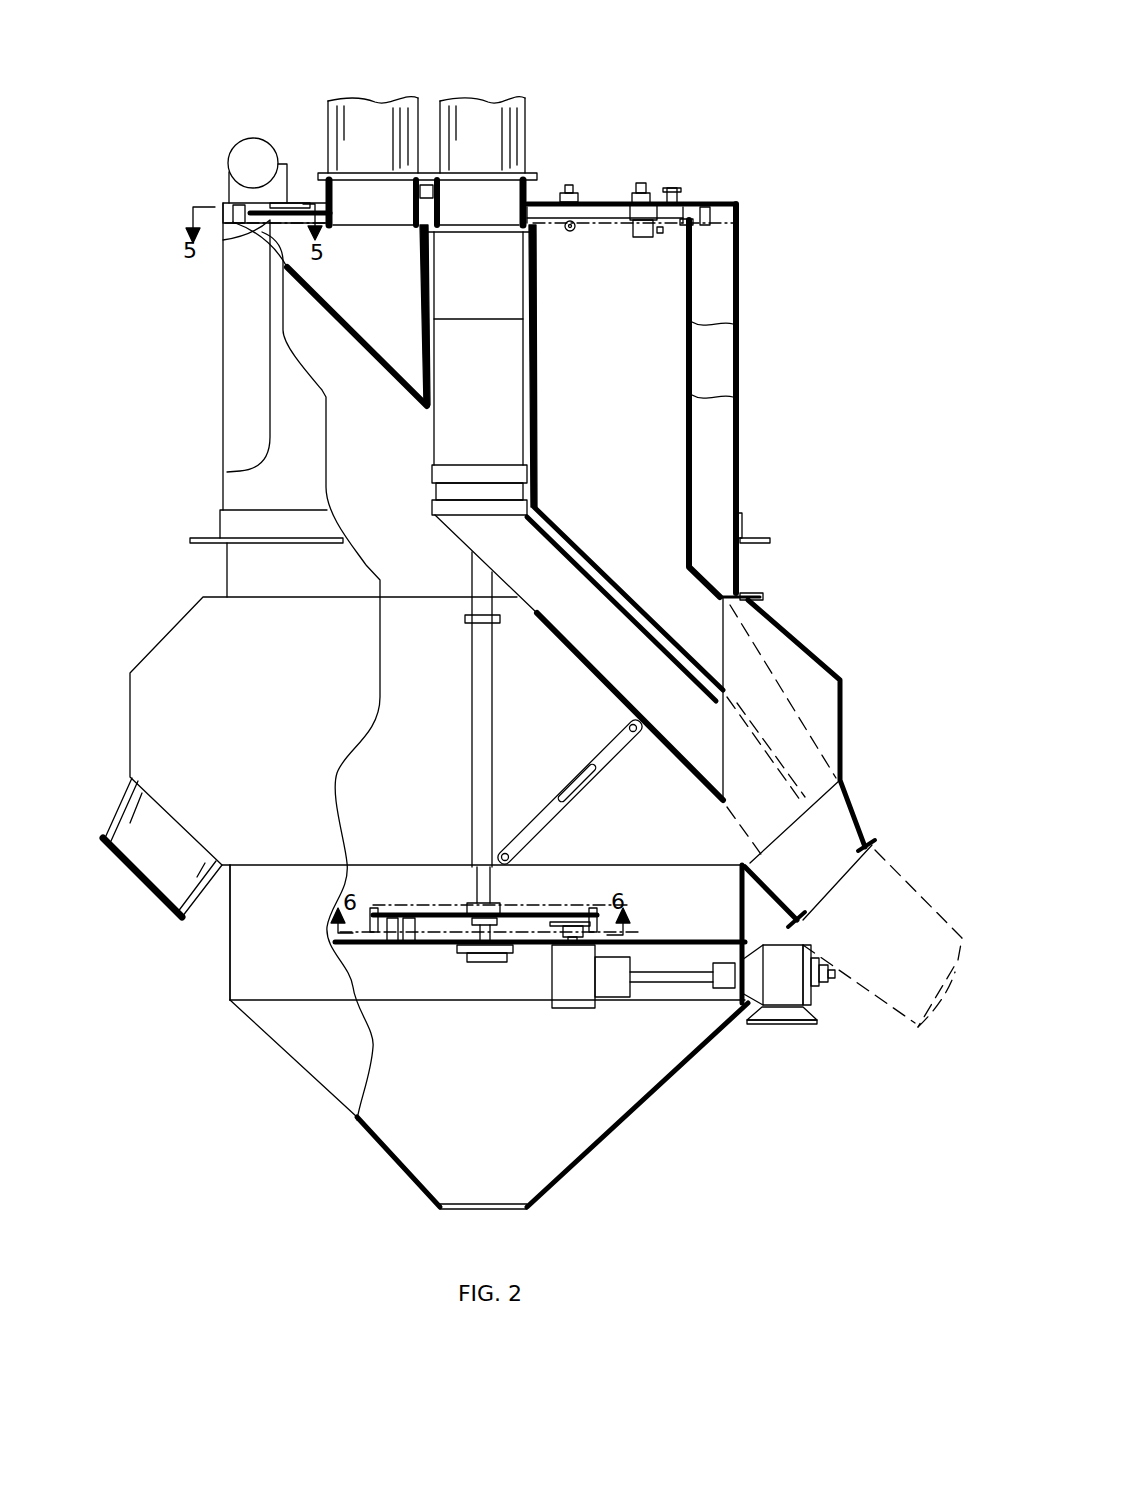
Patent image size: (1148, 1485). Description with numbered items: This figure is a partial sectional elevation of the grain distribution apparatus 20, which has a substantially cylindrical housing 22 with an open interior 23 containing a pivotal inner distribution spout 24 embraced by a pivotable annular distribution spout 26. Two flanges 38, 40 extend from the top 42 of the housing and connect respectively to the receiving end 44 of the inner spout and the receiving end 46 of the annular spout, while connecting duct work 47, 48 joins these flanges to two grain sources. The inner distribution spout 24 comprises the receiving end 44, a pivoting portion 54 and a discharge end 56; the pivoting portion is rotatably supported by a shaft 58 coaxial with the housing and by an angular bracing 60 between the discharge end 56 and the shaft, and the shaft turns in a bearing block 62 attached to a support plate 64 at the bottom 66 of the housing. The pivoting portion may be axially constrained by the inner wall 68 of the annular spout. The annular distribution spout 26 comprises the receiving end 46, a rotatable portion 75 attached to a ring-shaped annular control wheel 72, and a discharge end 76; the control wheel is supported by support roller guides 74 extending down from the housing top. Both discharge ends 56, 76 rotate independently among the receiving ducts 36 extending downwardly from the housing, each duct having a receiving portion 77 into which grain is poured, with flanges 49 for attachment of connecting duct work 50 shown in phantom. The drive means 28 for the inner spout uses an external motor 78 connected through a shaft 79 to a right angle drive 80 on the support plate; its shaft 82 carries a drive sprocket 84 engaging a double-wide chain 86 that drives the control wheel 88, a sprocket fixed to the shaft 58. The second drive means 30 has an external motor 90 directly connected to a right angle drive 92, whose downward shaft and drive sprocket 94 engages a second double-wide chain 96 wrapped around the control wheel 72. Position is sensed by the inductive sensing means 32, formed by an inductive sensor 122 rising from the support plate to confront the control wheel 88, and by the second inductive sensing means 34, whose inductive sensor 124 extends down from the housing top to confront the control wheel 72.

The grain distribution apparatus 20 is at (607, 86).
The housing 22 is at (748, 497).
The open interior 23 is at (712, 266).
The inner distribution spout 24 is at (432, 434).
The annular distribution spout 26 is at (735, 322).
The drive means 28 is at (675, 1040).
The second drive means 30 is at (243, 135).
The inductive sensing means 32 is at (404, 962).
The second inductive sensing means 34 is at (680, 189).
The receiving ducts 36 is at (122, 803).
The flange 38 is at (324, 188).
The flange 40 is at (530, 214).
The top 42 is at (730, 205).
The receiving end 44 is at (506, 177).
The receiving end 46 is at (346, 182).
The connecting duct work 47 is at (526, 113).
The connecting duct work 48 is at (418, 112).
The flanges 49 is at (104, 842).
The connecting duct work 50 is at (905, 880).
The pivoting portion 54 is at (528, 362).
The discharge end 56 is at (690, 767).
The shaft 58 is at (473, 722).
The angular bracing 60 is at (571, 805).
The bearing block 62 is at (459, 960).
The support plate 64 is at (357, 940).
The bottom 66 is at (231, 960).
The inner wall 68 is at (538, 291).
The annular control wheel 72 is at (603, 226).
The support roller guides 74 is at (575, 191).
The rotatable portion 75 is at (326, 308).
The discharge end 76 is at (765, 645).
The receiving portion 77 is at (810, 812).
The motor 78 is at (818, 1000).
The shaft 79 is at (663, 985).
The right angle drive 80 is at (576, 997).
The shaft 82 is at (568, 943).
The drive sprocket 84 is at (568, 924).
The double-wide chain 86 is at (368, 932).
The control wheel 88 is at (443, 913).
The motor 90 is at (229, 158).
The right angle drive 92 is at (229, 177).
The shaft and drive sprocket 94 is at (297, 200).
The second double-wide chain 96 is at (232, 213).
The inductive sensor 122 is at (383, 944).
The inductive sensor 124 is at (680, 198).